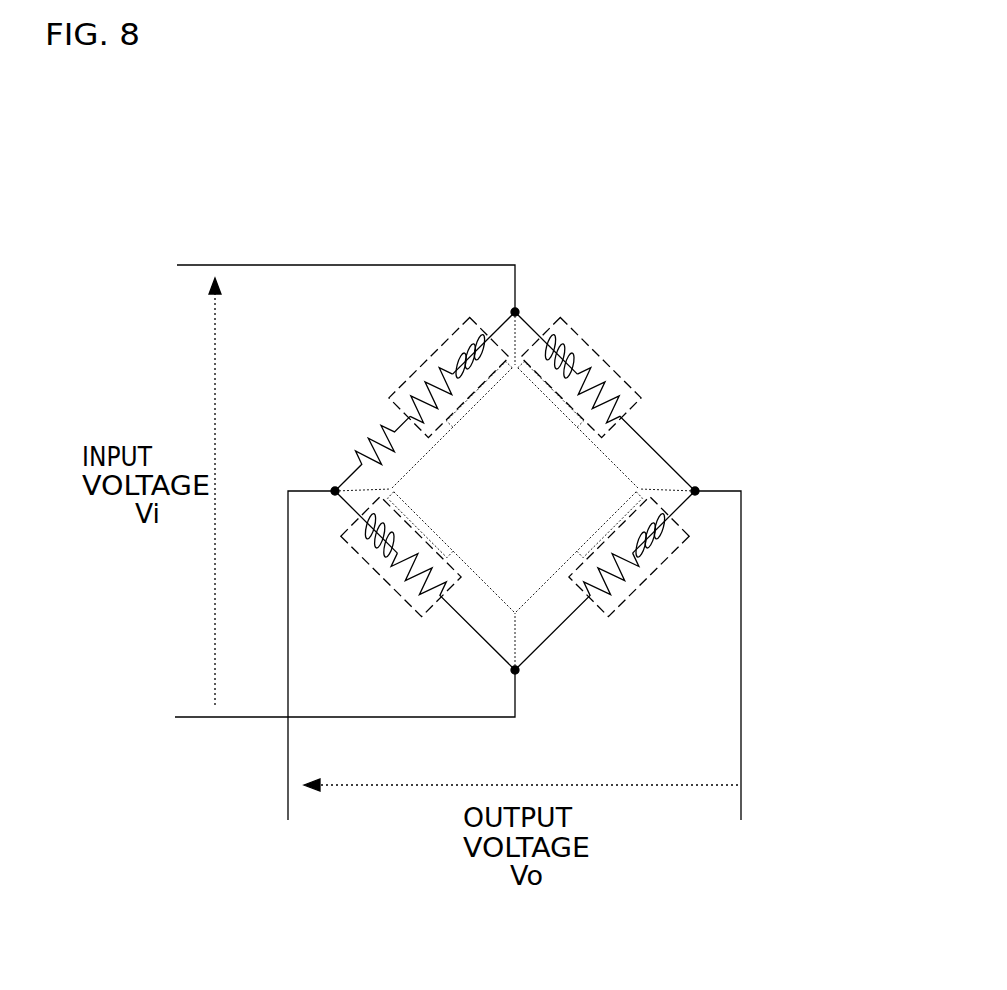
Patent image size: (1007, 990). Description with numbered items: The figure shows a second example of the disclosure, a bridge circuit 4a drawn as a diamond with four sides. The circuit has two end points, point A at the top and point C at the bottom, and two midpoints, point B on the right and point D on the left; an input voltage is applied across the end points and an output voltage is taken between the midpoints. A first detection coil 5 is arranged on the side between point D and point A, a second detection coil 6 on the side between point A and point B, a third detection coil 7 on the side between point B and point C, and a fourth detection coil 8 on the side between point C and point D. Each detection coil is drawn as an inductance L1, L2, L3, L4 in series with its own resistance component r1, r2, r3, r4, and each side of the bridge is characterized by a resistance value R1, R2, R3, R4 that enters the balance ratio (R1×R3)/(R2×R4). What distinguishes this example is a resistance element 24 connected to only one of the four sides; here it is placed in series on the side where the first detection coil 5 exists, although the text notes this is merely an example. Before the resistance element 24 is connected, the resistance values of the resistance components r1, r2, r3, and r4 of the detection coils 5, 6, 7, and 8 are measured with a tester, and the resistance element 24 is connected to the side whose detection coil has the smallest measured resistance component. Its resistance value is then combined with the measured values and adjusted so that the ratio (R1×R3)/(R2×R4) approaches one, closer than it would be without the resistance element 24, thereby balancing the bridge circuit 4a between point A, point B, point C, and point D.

The bridge circuit 4a is at (638, 238).
The first detection coil 5 is at (424, 354).
The second detection coil 6 is at (612, 355).
The third detection coil 7 is at (650, 590).
The fourth detection coil 8 is at (385, 580).
The resistance element 24 is at (357, 420).
The point A is at (515, 312).
The point B is at (695, 491).
The point C is at (517, 672).
The point D is at (335, 491).
The coil L1 is at (465, 345).
The coil L2 is at (565, 345).
The coil L3 is at (668, 542).
The coil L4 is at (363, 542).
The resistance component r1 is at (416, 388).
The resistance component r2 is at (636, 423).
The resistance component r3 is at (584, 611).
The resistance component r4 is at (447, 611).
The resistance value R1 is at (451, 426).
The resistance value R2 is at (578, 426).
The resistance value R3 is at (579, 552).
The resistance value R4 is at (452, 552).